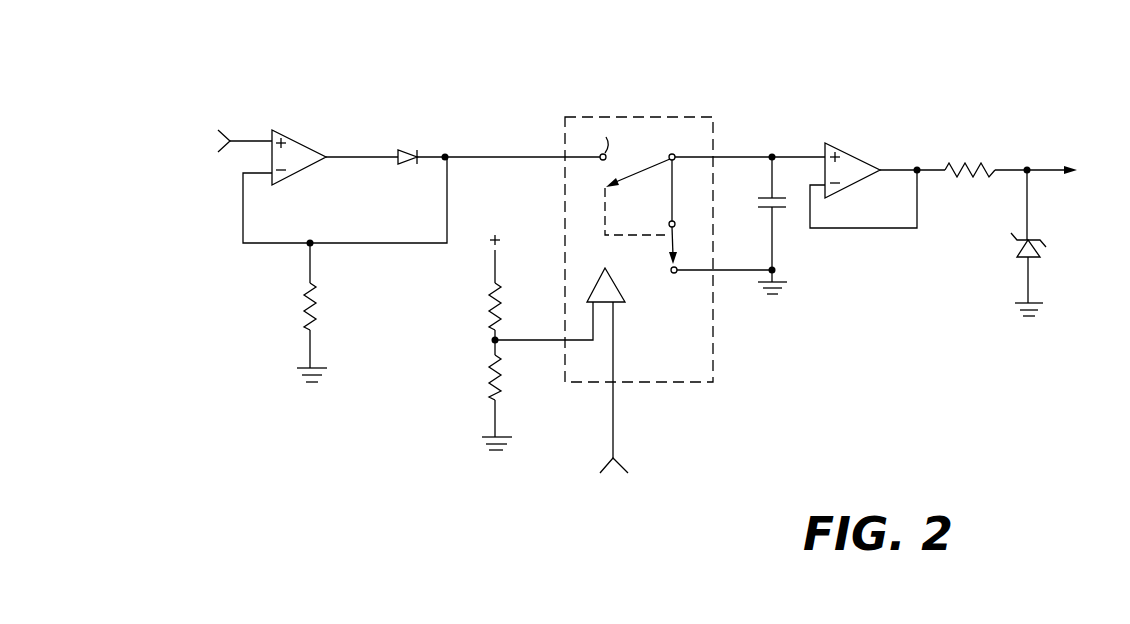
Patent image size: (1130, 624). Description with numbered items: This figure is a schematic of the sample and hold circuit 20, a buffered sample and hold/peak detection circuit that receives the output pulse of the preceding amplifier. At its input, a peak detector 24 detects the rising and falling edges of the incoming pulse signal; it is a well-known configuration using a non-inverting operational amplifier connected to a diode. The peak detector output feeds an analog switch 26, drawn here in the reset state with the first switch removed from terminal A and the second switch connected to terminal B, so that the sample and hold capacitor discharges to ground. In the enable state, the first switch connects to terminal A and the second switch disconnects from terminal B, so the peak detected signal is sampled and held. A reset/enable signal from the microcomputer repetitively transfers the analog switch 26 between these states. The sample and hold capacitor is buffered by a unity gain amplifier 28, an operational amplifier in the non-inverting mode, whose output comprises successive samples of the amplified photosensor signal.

The sample and hold circuit 20 is at (806, 58).
The peak detector 24 is at (354, 110).
The analog switch 26 is at (673, 117).
The unity gain amplifier 28 is at (858, 142).